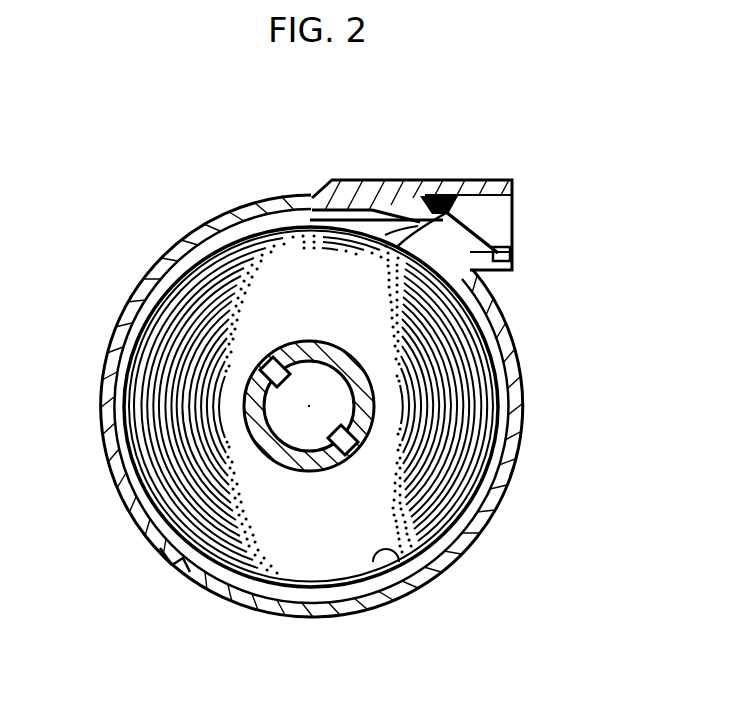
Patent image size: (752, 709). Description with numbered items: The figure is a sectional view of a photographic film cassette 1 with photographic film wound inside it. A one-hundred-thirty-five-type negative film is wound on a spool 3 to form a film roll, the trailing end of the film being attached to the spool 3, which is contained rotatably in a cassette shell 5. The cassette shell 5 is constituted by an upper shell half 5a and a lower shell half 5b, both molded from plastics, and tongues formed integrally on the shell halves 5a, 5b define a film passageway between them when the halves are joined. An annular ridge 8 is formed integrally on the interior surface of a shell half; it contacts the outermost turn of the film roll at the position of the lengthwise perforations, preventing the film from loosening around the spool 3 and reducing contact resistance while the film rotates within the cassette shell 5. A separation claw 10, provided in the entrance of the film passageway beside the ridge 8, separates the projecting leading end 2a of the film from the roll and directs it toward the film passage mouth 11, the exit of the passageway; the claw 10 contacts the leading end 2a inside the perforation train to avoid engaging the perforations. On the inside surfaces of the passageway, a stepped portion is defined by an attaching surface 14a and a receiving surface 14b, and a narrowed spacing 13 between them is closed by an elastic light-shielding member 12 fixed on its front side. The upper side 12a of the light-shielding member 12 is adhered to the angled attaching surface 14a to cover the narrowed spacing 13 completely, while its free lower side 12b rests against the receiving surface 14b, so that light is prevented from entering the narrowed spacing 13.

The photographic film cassette 1 is at (522, 449).
The leading end 2a is at (410, 202).
The spool 3 is at (309, 476).
The cassette shell 5 is at (58, 600).
The upper shell half 5a is at (160, 545).
The lower shell half 5b is at (197, 588).
The annular ridge 8 is at (403, 566).
The separation claw 10 is at (403, 243).
The film passage mouth 11 is at (512, 221).
The light-shielding member 12 is at (490, 190).
The upper side 12a is at (452, 200).
The lower side 12b is at (512, 240).
The narrowed spacing 13 is at (502, 310).
The attaching surface 14a is at (427, 195).
The receiving surface 14b is at (498, 272).